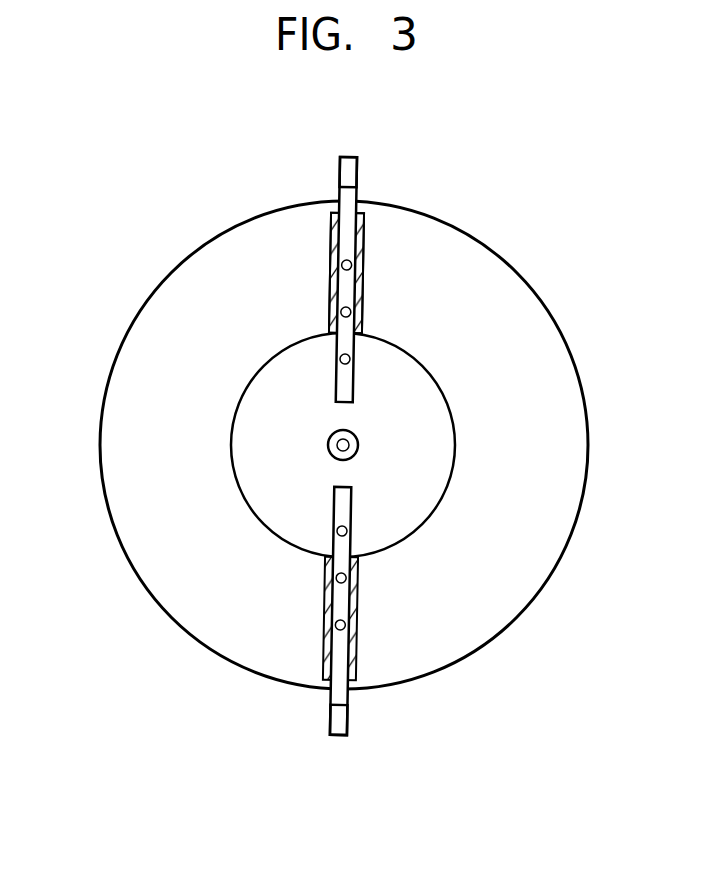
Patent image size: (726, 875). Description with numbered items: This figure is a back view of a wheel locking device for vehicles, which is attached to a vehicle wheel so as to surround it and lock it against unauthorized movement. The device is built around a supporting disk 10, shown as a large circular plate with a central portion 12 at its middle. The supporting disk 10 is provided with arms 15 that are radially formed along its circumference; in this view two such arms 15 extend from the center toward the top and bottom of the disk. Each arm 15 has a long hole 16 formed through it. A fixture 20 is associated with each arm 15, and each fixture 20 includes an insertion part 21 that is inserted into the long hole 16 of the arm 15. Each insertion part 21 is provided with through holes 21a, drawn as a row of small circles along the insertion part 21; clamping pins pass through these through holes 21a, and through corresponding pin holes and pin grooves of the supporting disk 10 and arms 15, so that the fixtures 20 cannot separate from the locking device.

The supporting disk 10 is at (163, 586).
The hub 12 is at (340, 448).
The arm 15 is at (331, 258).
The long hole 16 is at (362, 248).
The fixture 20 is at (357, 172).
The insertion part 21 is at (340, 178).
The through hole 21a is at (349, 357).